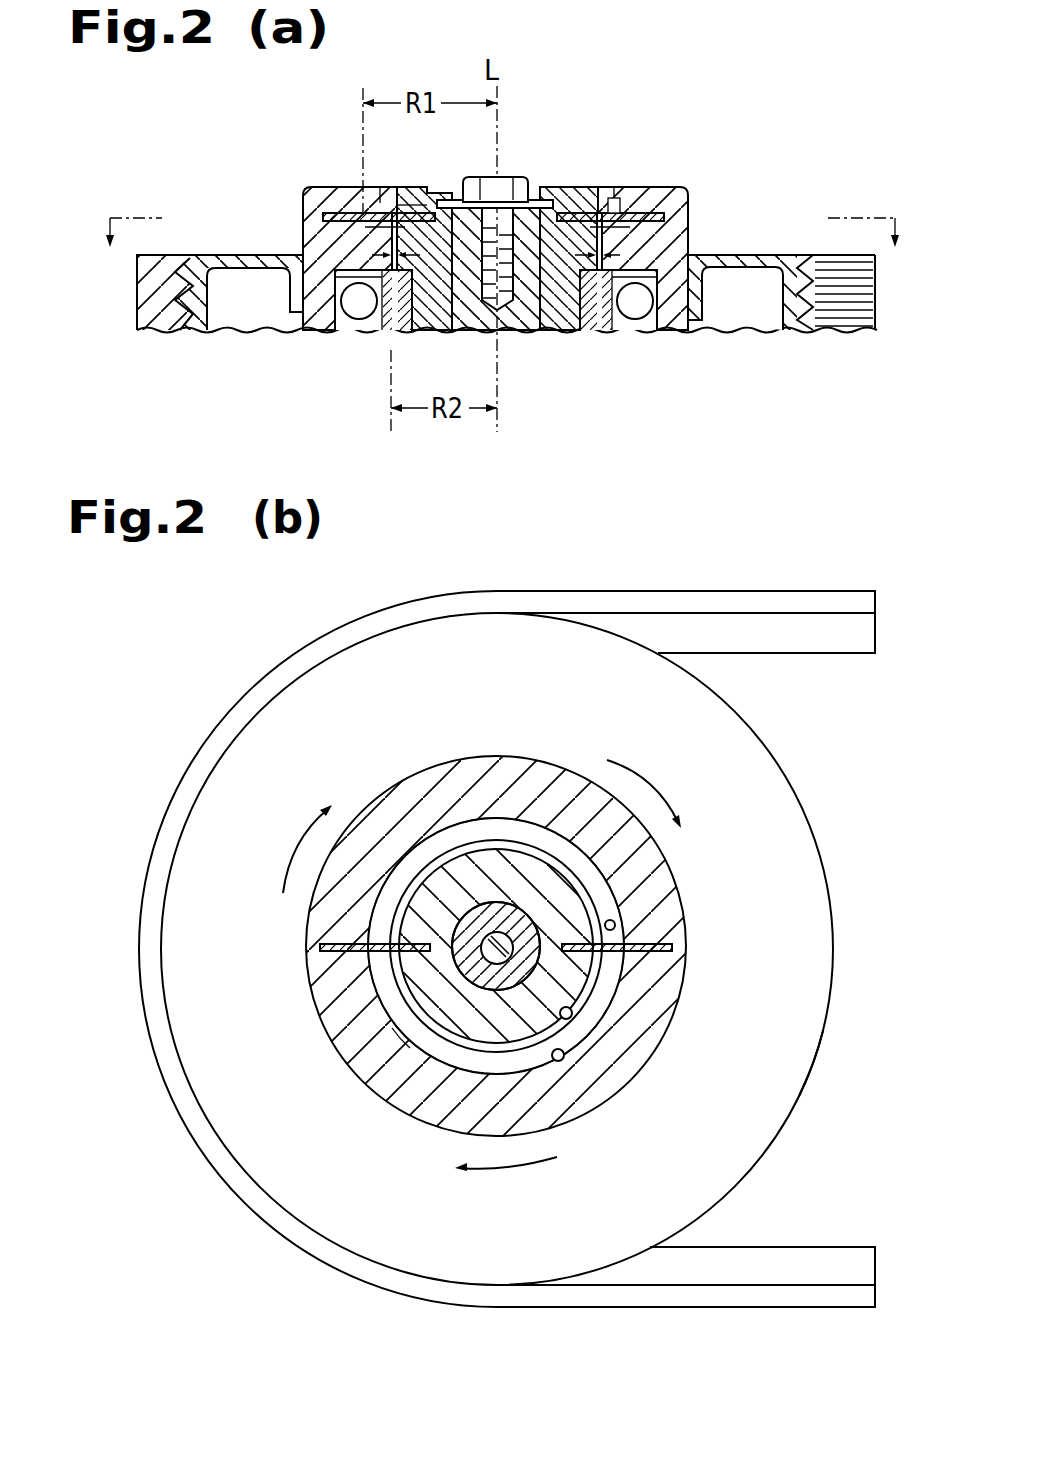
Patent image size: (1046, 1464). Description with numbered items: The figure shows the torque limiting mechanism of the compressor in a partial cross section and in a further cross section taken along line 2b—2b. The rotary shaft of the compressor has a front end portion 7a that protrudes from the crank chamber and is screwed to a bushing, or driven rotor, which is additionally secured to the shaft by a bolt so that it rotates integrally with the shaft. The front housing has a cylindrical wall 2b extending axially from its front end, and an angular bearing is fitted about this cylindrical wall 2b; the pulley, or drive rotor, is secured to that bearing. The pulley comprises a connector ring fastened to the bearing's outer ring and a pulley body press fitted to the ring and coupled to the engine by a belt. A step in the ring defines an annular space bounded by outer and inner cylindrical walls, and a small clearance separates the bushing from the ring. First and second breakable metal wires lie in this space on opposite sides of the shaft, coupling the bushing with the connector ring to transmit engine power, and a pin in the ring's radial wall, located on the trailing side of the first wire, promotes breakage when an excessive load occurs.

The cylindrical wall 2b is at (501, 248).
The front end portion 7a is at (462, 224).